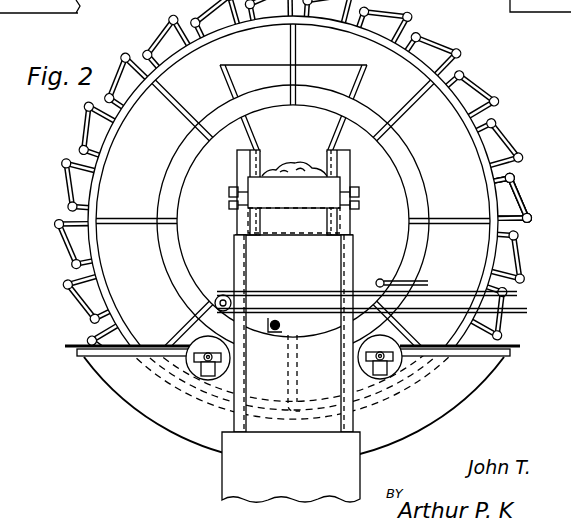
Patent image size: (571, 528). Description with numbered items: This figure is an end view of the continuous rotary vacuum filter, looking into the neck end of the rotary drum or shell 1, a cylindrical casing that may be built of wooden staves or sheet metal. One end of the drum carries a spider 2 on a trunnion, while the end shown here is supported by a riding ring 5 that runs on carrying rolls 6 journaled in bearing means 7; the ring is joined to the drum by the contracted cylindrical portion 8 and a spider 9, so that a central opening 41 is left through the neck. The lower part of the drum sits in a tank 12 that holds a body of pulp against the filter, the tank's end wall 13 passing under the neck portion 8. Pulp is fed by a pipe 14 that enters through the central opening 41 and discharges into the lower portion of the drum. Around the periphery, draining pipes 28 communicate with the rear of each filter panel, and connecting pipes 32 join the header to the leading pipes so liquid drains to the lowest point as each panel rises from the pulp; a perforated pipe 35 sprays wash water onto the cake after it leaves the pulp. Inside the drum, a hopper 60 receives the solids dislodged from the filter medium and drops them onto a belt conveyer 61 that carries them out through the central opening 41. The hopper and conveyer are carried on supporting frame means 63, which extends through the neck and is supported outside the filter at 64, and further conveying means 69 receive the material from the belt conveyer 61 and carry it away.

The rotary drum or shell 1 is at (494, 129).
The spider 2 is at (527, 185).
The riding ring 5 is at (400, 171).
The carrying rolls 6 is at (187, 376).
The bearing means 7 is at (212, 367).
The contracted cylindrical portion 8 is at (408, 239).
The spider 9 is at (406, 107).
The tank 12 is at (294, 409).
The end wall 13 is at (152, 347).
The pipe 14 is at (283, 326).
The draining pipes 28 is at (510, 212).
The connecting pipes 32 is at (522, 190).
The perforated pipe 35 is at (380, 280).
The central opening 41 is at (279, 193).
The hopper 60 is at (362, 79).
The belt conveyer 61 is at (256, 183).
The supporting frame means 63 is at (348, 225).
The support 64 is at (234, 423).
The conveying means 69 is at (439, 289).